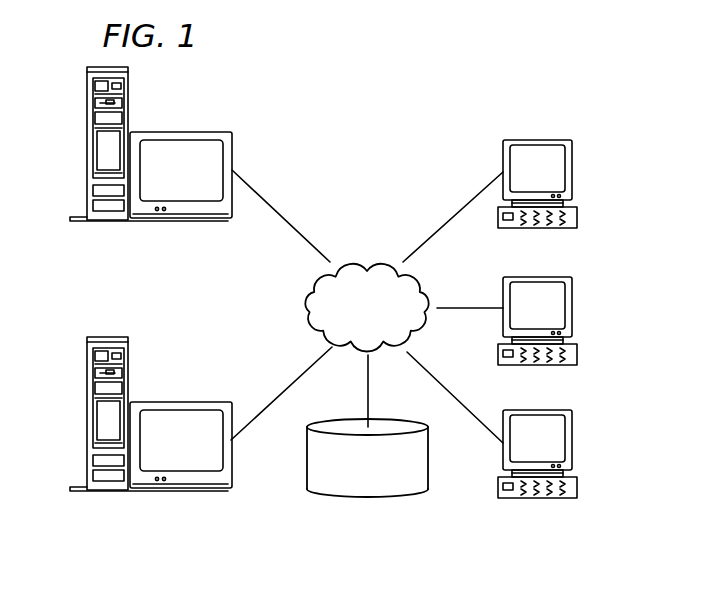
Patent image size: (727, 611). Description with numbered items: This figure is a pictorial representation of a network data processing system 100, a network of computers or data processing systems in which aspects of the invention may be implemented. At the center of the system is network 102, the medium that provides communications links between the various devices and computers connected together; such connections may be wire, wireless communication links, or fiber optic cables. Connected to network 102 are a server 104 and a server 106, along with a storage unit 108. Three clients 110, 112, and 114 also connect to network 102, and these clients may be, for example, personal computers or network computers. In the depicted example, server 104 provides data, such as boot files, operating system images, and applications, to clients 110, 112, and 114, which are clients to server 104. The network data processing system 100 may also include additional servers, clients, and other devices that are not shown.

The network data processing system 100 is at (412, 152).
The network 102 is at (360, 258).
The server 104 is at (87, 144).
The server 106 is at (87, 412).
The storage unit 108 is at (383, 497).
The client 110 is at (572, 172).
The client 112 is at (572, 303).
The client 114 is at (572, 446).